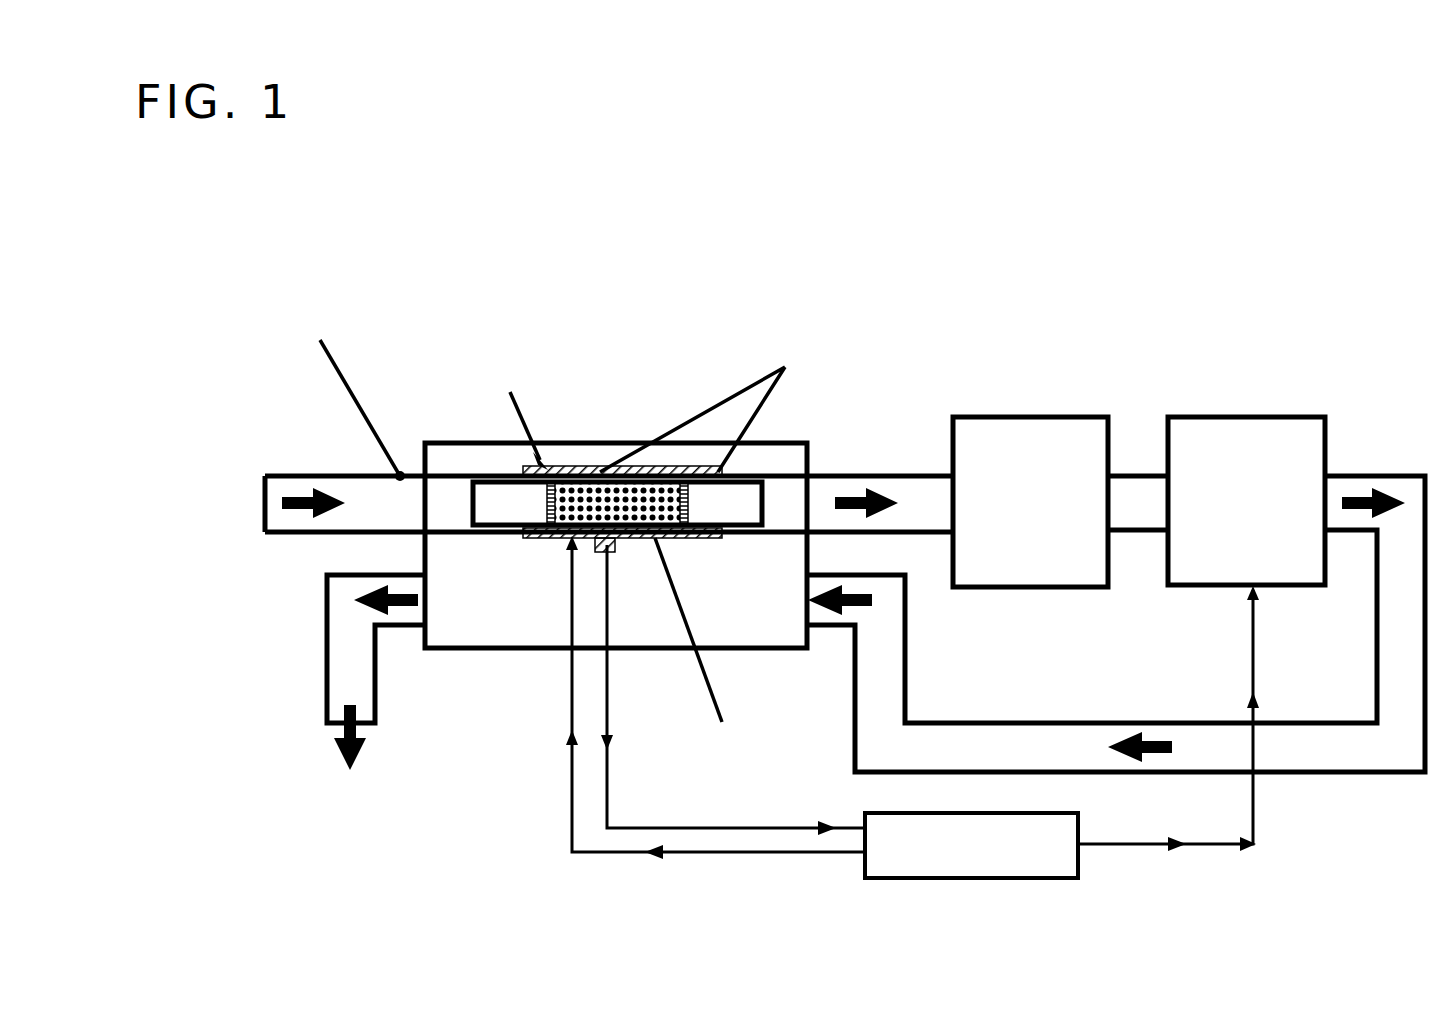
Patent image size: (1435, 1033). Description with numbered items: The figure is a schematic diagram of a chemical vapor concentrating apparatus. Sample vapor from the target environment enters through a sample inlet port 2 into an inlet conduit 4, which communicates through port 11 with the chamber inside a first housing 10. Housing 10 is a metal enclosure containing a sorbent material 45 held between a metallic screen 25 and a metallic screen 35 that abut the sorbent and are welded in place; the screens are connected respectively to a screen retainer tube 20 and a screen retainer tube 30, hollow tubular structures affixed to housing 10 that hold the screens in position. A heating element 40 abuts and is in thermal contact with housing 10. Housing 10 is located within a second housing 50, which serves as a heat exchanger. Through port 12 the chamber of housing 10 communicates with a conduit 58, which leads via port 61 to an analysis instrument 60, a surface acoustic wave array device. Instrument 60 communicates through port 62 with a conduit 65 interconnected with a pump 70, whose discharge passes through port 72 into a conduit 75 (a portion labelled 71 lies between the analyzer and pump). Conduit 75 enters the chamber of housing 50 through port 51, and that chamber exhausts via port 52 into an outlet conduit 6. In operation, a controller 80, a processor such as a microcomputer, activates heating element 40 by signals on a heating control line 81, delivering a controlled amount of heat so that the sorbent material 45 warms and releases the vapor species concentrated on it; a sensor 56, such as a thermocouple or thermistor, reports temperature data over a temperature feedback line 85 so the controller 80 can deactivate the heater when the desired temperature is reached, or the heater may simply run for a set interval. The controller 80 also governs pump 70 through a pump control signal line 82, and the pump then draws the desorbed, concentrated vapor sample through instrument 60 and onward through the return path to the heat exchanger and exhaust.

The sample inlet 2 is at (266, 474).
The inlet conduit 4 is at (342, 488).
The outlet conduit 6 is at (346, 674).
The first enclosure (housing) 10 is at (450, 474).
The port 11 is at (402, 474).
The port 12 is at (818, 474).
The screen retainer tube 20 is at (518, 538).
The metallic screen 25 is at (558, 466).
The screen retainer tube 30 is at (733, 538).
The metallic screen 35 is at (686, 466).
The heating element 40 is at (656, 466).
The sorbent material 45 is at (598, 466).
The second enclosure (housing) 50 is at (511, 648).
The port 51 is at (808, 630).
The port 52 is at (415, 630).
The sensor 56 is at (615, 545).
The conduit 58 is at (887, 474).
The analysis instrument 60 is at (1062, 420).
The port 61 is at (940, 474).
The port 62 is at (1113, 535).
The conduit 65 is at (1140, 474).
The pump 70 is at (1278, 570).
The pump inlet 71 is at (1165, 535).
The port 72 is at (1330, 476).
The conduit 75 is at (905, 640).
The controller 80 is at (865, 874).
The heating control line 81 is at (718, 856).
The pump control signal line 82 is at (1230, 846).
The temperature feedback line 85 is at (705, 826).